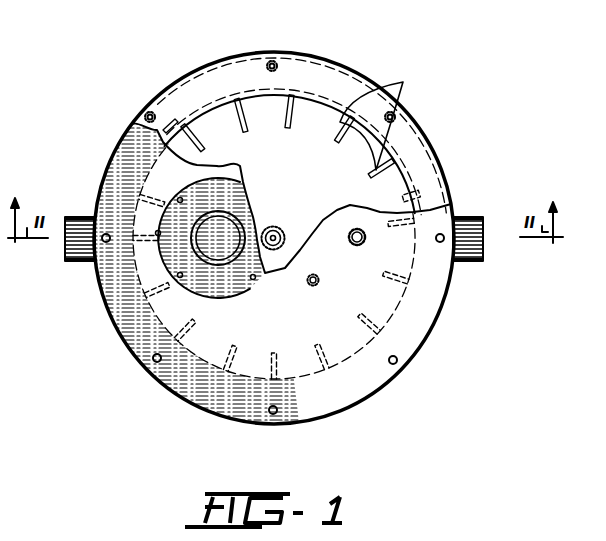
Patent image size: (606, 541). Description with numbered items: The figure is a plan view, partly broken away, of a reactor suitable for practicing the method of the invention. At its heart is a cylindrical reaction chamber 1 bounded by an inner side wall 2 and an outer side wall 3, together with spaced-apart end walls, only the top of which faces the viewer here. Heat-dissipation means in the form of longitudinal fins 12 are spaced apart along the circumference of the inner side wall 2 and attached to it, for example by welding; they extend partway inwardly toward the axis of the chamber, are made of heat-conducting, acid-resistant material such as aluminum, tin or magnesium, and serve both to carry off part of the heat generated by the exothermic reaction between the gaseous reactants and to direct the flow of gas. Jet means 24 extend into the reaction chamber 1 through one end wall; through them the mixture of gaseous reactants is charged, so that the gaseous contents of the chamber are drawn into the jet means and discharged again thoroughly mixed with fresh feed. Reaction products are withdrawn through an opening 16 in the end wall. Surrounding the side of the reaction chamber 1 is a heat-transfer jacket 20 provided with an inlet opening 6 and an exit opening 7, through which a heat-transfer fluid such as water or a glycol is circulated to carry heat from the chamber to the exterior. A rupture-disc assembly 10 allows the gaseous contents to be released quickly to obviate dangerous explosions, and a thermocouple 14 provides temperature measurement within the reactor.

The reaction chamber 1 is at (420, 278).
The inner side wall 2 is at (312, 105).
The outer side wall 3 is at (295, 95).
The inlet opening 6 is at (467, 215).
The exit opening 7 is at (72, 262).
The rupture-disc assembly 10 is at (175, 213).
The longitudinal fins 12 is at (403, 82).
The thermocouple 14 is at (308, 285).
The opening 16 is at (355, 248).
The heat-transfer jacket 20 is at (208, 85).
The jet means 24 is at (275, 228).